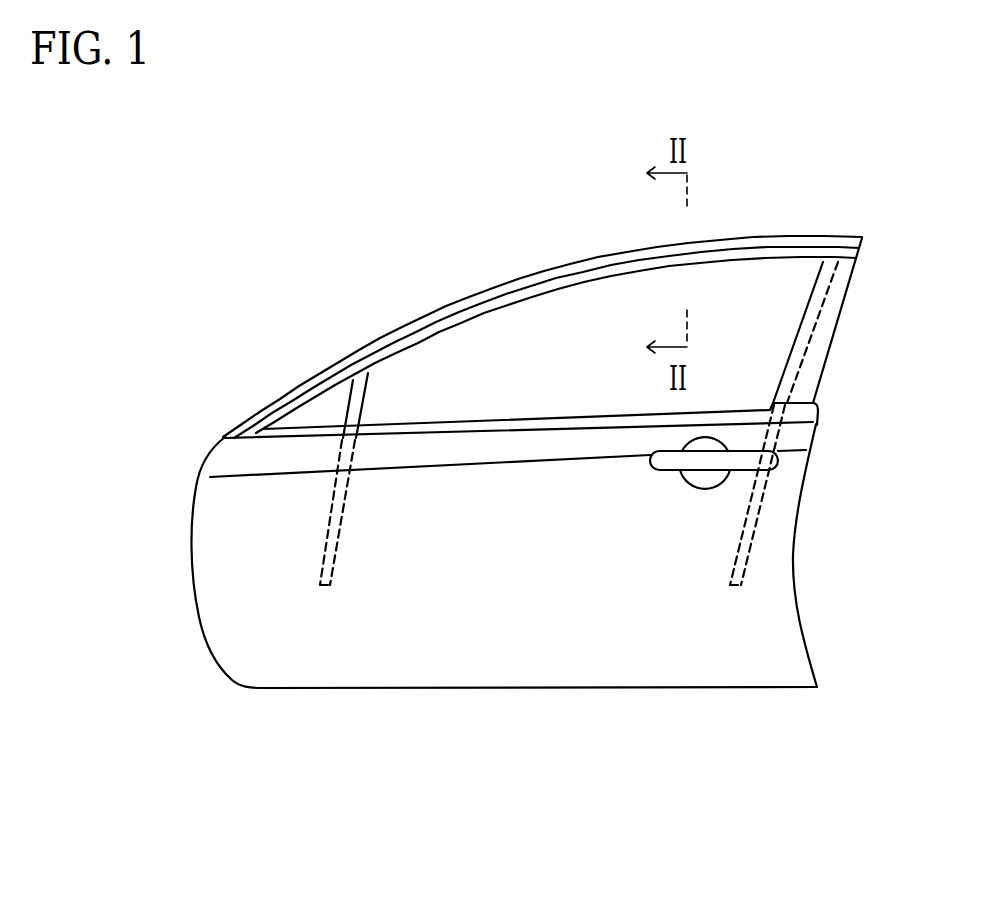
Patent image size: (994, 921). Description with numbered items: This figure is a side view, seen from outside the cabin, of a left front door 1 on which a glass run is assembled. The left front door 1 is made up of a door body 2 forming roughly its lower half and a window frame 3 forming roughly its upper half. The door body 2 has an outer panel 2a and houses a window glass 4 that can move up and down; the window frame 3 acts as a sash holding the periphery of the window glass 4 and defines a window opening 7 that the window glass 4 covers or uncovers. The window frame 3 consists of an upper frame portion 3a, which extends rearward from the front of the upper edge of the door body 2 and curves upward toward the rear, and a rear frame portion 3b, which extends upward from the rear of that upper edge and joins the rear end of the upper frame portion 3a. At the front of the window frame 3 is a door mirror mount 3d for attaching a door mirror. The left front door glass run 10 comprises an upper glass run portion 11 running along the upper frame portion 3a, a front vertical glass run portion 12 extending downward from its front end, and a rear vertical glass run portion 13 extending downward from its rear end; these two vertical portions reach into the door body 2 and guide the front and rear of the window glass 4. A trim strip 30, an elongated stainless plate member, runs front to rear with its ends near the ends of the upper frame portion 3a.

The left front door 1 is at (511, 457).
The door body 2 is at (482, 688).
The outer panel 2a is at (548, 665).
The window frame 3 is at (557, 287).
The upper frame portion 3a is at (546, 287).
The rear frame portion 3b is at (844, 320).
The door mirror mount 3d is at (328, 407).
The window glass 4 is at (760, 363).
The window opening 7 is at (807, 276).
The left front door glass run 10 is at (754, 227).
The upper glass run portion 11 is at (519, 279).
The front vertical glass run portion 12 is at (320, 560).
The rear vertical glass run portion 13 is at (752, 543).
The trim strip 30 is at (817, 247).